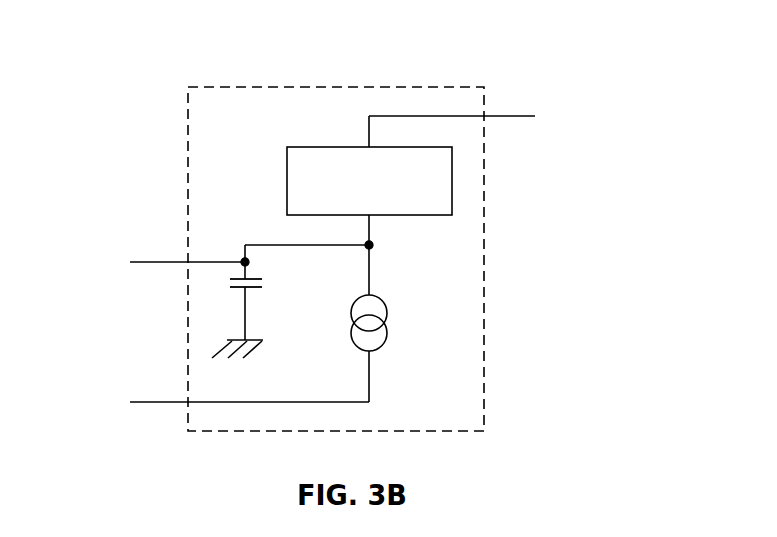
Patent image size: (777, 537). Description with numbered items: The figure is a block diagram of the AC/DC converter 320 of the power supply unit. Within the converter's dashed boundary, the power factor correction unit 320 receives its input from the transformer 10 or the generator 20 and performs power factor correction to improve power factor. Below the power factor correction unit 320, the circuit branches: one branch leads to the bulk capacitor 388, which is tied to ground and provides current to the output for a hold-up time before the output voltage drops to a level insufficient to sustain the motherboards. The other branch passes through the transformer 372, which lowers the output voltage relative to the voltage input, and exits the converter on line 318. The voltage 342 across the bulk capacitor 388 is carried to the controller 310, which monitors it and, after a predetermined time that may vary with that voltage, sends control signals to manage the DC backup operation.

The AC/DC converter 320 is at (343, 87).
The transformer 10 is at (604, 107).
The generator 20 is at (607, 128).
The controller 310 is at (86, 262).
The voltage 342 is at (153, 262).
The bulk capacitor 388 is at (252, 287).
The transformer 372 is at (388, 312).
The output line 318 is at (232, 402).